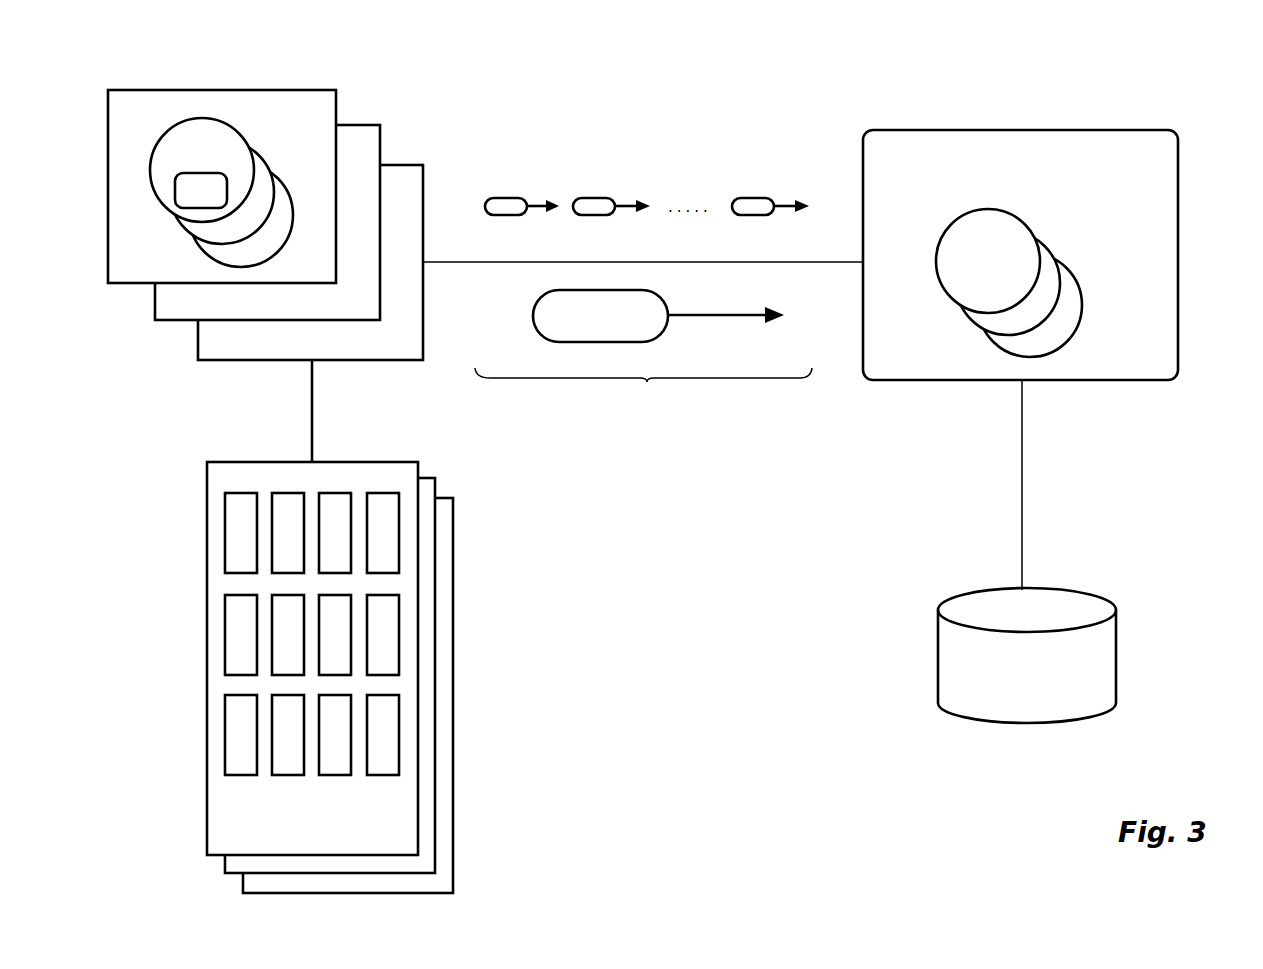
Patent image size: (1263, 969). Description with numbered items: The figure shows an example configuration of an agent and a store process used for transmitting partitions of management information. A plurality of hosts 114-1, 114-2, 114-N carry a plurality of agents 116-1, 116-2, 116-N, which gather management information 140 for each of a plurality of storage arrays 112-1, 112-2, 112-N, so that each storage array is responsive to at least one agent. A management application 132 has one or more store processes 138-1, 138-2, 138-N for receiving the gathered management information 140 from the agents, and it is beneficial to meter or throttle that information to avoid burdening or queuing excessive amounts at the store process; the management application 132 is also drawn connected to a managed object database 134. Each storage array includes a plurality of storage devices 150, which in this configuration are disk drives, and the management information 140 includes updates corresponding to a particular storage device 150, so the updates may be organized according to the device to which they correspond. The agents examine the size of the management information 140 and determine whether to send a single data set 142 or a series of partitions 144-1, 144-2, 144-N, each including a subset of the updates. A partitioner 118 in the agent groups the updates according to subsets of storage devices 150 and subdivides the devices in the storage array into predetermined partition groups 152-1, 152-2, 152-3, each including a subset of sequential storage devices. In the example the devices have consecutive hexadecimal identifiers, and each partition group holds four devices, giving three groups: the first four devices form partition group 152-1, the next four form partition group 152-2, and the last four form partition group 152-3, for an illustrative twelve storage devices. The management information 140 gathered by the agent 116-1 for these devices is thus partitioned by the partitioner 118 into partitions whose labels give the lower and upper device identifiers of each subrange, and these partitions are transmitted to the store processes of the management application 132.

The storage array 112-1 is at (418, 462).
The storage array 112-2 is at (435, 478).
The storage array 112-N is at (452, 498).
The host 114-1 is at (336, 90).
The host 114-2 is at (380, 125).
The host 114-N is at (423, 165).
The agent 116-1 is at (182, 120).
The agent 116-2 is at (257, 153).
The agent 116-N is at (292, 193).
The partitioner 118 is at (170, 183).
The management application 132 is at (940, 130).
The managed object database (MODB) 134 is at (938, 630).
The store process 138-1 is at (1015, 212).
The store process 138-2 is at (1043, 240).
The store process 138-N is at (1083, 300).
The management information 140 is at (647, 380).
The single data set 142 is at (627, 342).
The partition 144-1 is at (515, 198).
The partition 144-2 is at (595, 198).
The partition 144-N is at (760, 198).
The storage device 150 is at (246, 606).
The partition group 152-1 is at (197, 582).
The partition group 152-2 is at (197, 685).
The partition group 152-3 is at (197, 780).